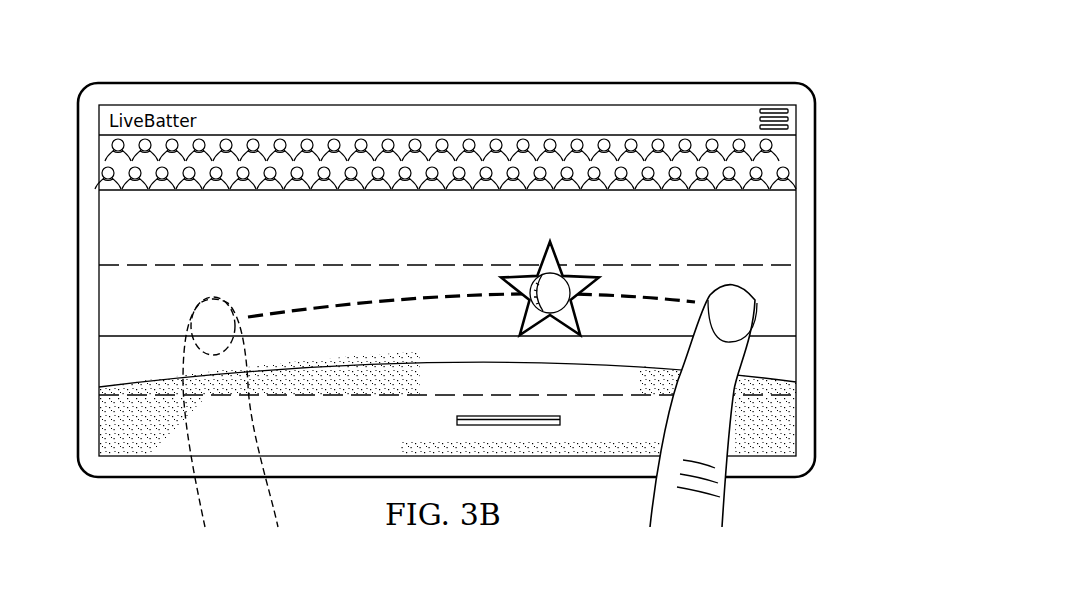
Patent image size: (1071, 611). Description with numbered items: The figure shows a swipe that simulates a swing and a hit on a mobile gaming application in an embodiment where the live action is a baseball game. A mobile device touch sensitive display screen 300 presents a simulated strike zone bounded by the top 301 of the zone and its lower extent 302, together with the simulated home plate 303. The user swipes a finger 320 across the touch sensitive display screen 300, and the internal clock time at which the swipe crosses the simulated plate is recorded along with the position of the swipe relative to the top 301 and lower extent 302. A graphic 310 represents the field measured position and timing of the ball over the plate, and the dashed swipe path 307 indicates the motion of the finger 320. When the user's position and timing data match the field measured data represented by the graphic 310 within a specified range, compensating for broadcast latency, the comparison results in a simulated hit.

The touch sensitive display screen 300 is at (257, 81).
The top of the simulated strike zone 301 is at (431, 263).
The lower extent of the strike zone 302 is at (618, 393).
The simulated home plate 303 is at (513, 426).
The pitch trajectory 307 is at (333, 303).
The graphic 310 is at (553, 251).
The finger 320 is at (728, 495).